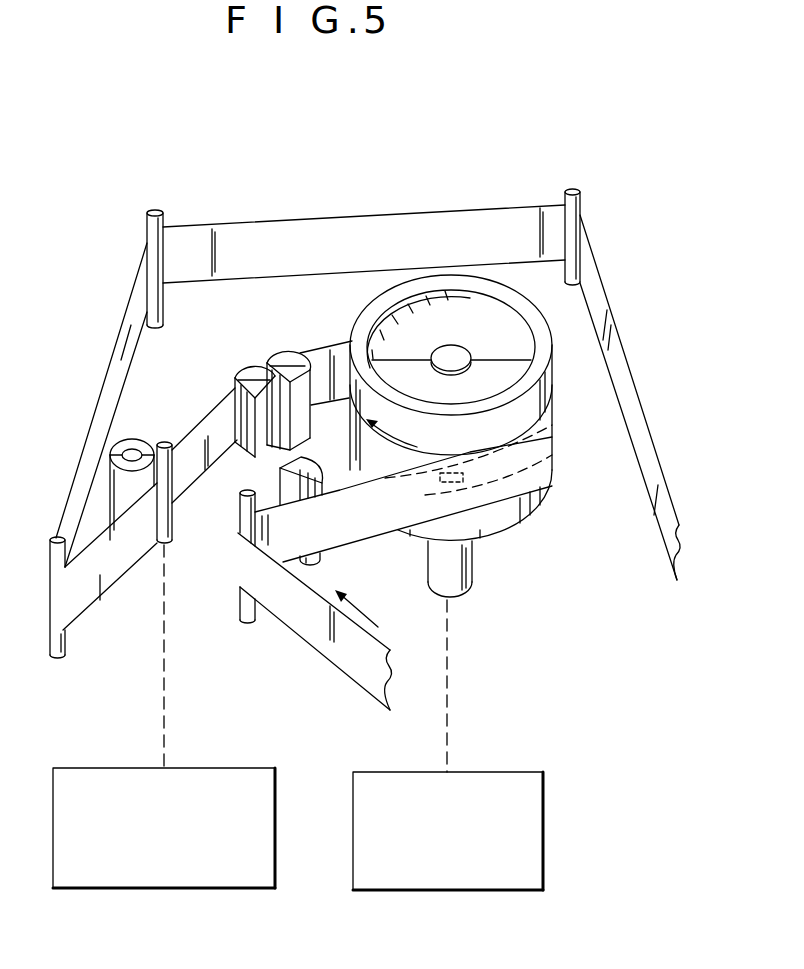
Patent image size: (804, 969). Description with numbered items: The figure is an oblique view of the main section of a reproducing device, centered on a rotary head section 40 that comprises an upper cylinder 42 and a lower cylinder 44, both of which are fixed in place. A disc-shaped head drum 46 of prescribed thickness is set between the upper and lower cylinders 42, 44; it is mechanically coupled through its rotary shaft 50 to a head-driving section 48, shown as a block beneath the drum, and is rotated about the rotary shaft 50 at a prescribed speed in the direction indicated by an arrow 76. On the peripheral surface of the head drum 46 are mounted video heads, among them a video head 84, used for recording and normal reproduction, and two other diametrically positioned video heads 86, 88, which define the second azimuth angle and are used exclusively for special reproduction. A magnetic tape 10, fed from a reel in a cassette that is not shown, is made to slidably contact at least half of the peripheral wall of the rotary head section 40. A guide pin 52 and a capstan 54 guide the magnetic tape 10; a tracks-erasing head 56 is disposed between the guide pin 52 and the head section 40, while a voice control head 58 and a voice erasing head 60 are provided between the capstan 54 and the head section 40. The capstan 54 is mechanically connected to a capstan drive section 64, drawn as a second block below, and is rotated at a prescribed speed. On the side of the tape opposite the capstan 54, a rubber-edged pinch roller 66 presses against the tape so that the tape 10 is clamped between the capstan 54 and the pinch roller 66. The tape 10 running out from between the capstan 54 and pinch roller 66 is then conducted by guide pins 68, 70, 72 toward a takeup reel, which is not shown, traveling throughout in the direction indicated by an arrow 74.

The magnetic tape 10 is at (656, 457).
The rotary head section 40 is at (522, 533).
The upper cylinder 42 is at (552, 348).
The lower cylinder 44 is at (548, 477).
The head drum 46 is at (362, 446).
The head-driving section 48 is at (512, 772).
The rotary shaft 50 is at (470, 577).
The guide pin 52 is at (245, 624).
The capstan 54 is at (164, 442).
The tracks-erasing head 56 is at (320, 556).
The voice control head 58 is at (245, 370).
The voice erasing head 60 is at (282, 357).
The capstan drive section 64 is at (249, 768).
The pinch roller 66 is at (137, 442).
The guide pin 68 is at (57, 659).
The guide pin 70 is at (155, 210).
The guide pin 72 is at (575, 190).
The arrow 74 is at (363, 611).
The arrow 76 is at (417, 436).
The video head 84 is at (438, 486).
The video head 86 is at (552, 428).
The video head 88 is at (350, 420).